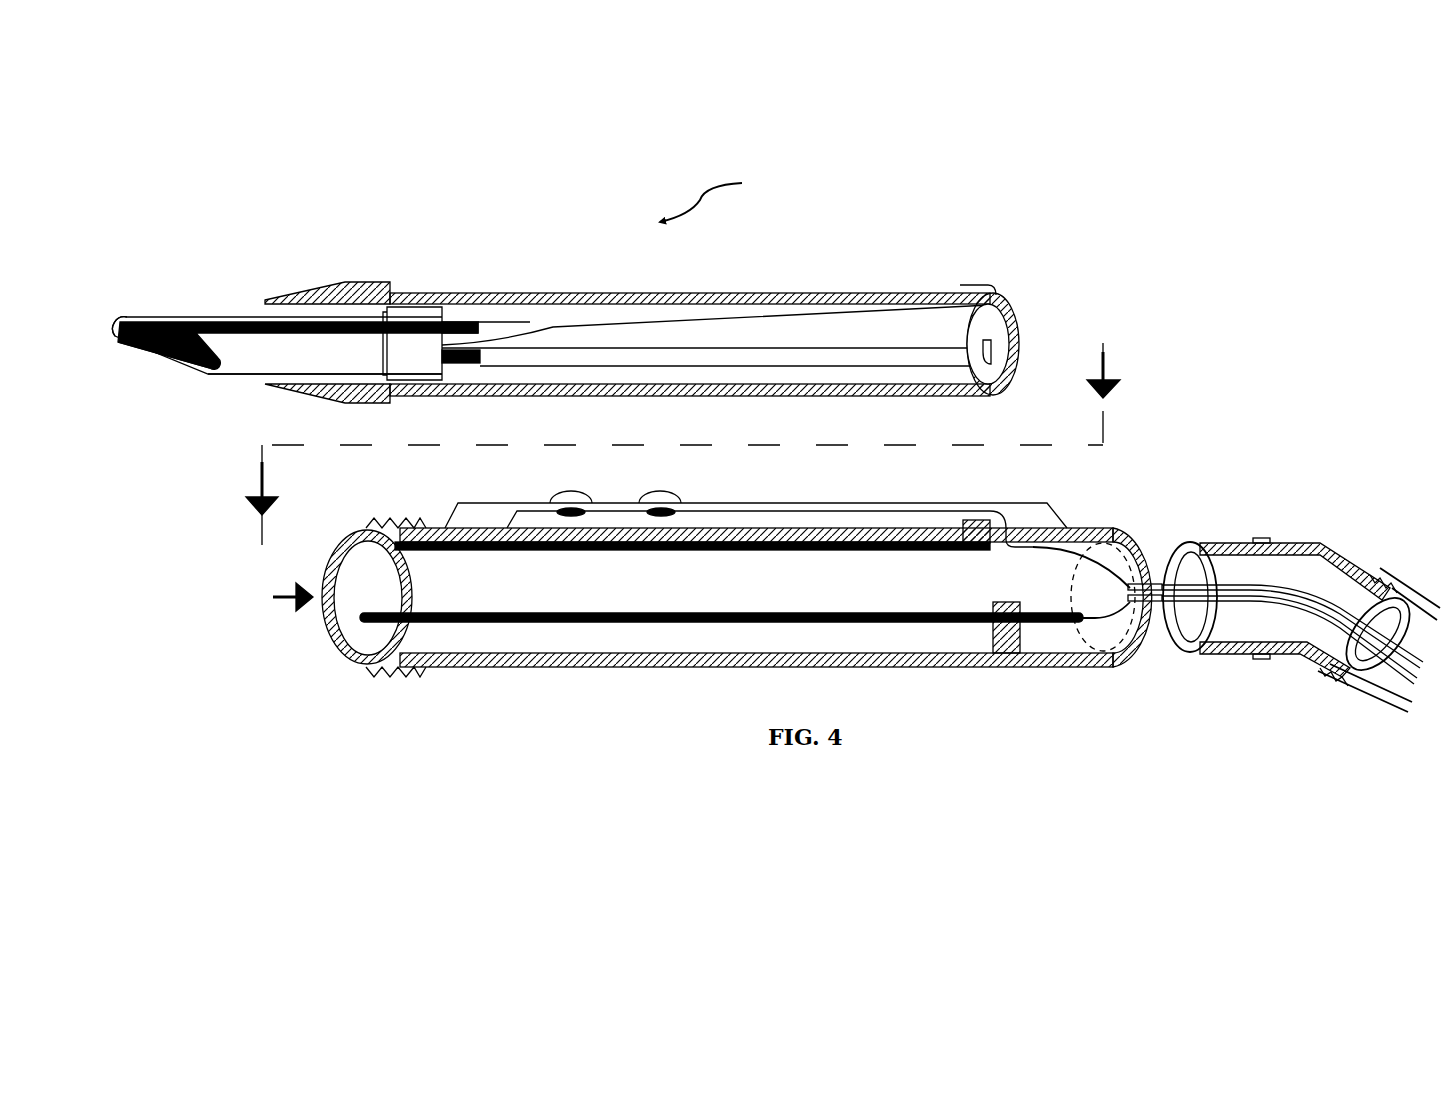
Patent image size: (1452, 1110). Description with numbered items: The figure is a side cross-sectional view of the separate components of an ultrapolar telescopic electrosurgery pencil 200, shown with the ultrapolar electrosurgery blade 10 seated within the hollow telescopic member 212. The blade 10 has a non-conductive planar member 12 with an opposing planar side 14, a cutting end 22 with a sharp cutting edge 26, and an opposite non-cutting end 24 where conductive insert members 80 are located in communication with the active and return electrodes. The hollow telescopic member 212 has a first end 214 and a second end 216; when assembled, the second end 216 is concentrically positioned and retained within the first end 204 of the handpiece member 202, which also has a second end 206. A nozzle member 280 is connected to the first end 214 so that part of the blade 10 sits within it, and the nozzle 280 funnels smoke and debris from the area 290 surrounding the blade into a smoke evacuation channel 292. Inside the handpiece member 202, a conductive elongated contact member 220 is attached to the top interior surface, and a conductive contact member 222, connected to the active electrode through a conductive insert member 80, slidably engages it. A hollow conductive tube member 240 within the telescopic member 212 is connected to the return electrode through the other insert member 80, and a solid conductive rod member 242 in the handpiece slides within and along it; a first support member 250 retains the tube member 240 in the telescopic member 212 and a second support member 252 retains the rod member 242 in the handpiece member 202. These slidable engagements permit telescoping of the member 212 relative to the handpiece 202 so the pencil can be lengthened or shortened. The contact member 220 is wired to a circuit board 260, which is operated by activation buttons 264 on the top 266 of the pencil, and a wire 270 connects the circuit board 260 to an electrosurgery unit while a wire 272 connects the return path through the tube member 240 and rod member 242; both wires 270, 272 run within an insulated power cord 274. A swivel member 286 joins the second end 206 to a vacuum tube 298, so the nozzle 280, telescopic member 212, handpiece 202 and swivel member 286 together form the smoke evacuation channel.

The ultrapolar electrosurgery blade 10 is at (138, 314).
The non-conductive planar member 12 is at (240, 358).
The opposing planar side 14 is at (325, 352).
The cutting end 22 is at (114, 342).
The non-cutting end 24 is at (502, 330).
The sharp cutting edge 26 is at (172, 362).
The conductive insert members 80 is at (460, 322).
The ultrapolar telescopic electrosurgery pencil 200 is at (720, 197).
The handpiece member 202 is at (612, 670).
The first end of handpiece member 204 is at (323, 621).
The second end of handpiece member 206 is at (1143, 643).
The hollow telescopic member 212 is at (728, 293).
The first end of hollow telescopic member 214 is at (303, 396).
The second end of hollow telescopic member 216 is at (1008, 308).
The conductive elongated contact member 220 is at (903, 542).
The conductive contact member 222 is at (970, 287).
The hollow conductive tube member 240 is at (571, 358).
The solid conductive rod member 242 is at (460, 623).
The first support member 250 is at (992, 370).
The second support member 252 is at (1007, 647).
The circuit board 260 is at (752, 520).
The activation buttons 264 is at (580, 490).
The top 266 is at (842, 503).
The wire 270 is at (1067, 547).
The wire 272 is at (1097, 647).
The insulated power cord 274 is at (1302, 612).
The nozzle member 280 is at (292, 294).
The swivel member 286 is at (1230, 545).
The area within nozzle surrounding blade 290 is at (303, 377).
The smoke evacuation channel 292 is at (825, 335).
The vacuum tube 298 is at (1370, 690).